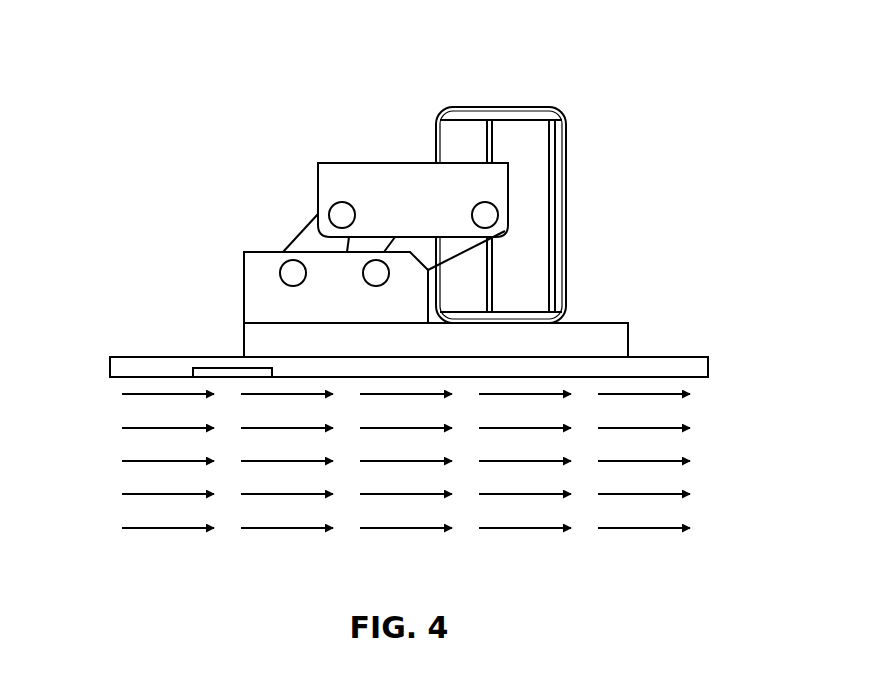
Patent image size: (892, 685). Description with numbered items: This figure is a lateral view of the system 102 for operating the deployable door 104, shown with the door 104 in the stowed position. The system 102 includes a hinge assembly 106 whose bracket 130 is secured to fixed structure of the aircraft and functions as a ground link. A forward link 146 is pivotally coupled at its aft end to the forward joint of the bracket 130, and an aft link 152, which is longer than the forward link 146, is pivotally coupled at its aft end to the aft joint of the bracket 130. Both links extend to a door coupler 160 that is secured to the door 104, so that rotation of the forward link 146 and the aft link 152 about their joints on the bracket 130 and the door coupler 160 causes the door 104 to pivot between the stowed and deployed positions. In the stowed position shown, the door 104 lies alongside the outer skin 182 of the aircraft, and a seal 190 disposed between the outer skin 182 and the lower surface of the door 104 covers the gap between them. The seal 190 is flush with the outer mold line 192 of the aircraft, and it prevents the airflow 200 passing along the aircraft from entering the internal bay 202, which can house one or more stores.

The system 102 is at (668, 67).
The deployable door 104 is at (628, 340).
The hinge assembly 106 is at (586, 159).
The bracket 130 is at (446, 137).
The forward link 146 is at (302, 226).
The aft link 152 is at (437, 253).
The door coupler 160 is at (328, 307).
The outer skin 182 is at (150, 357).
The seal 190 is at (236, 357).
The outer mold line 192 is at (110, 378).
The airflow 200 is at (363, 473).
The internal bay 202 is at (421, 99).